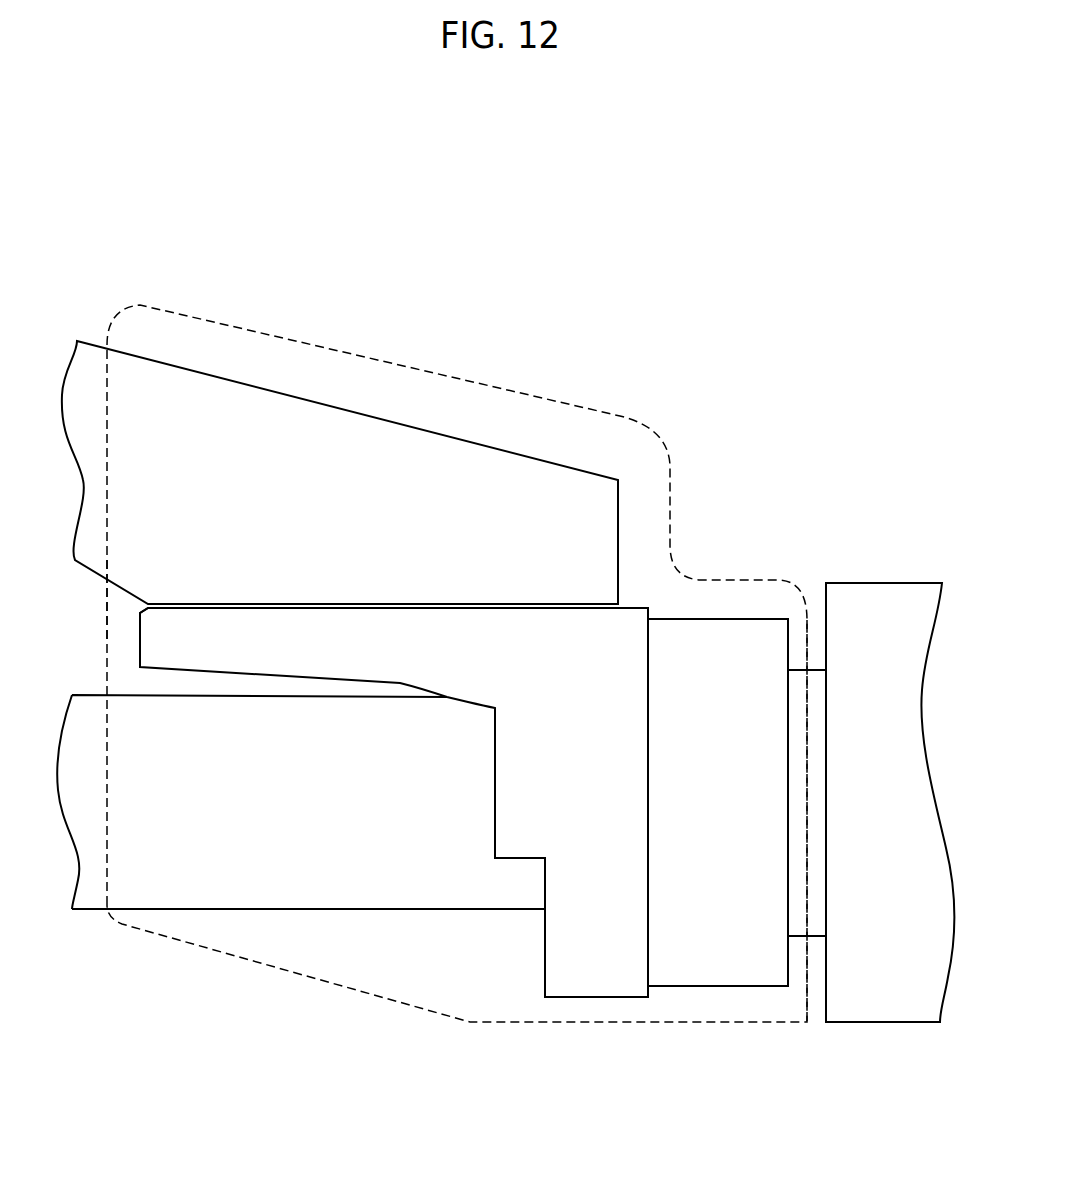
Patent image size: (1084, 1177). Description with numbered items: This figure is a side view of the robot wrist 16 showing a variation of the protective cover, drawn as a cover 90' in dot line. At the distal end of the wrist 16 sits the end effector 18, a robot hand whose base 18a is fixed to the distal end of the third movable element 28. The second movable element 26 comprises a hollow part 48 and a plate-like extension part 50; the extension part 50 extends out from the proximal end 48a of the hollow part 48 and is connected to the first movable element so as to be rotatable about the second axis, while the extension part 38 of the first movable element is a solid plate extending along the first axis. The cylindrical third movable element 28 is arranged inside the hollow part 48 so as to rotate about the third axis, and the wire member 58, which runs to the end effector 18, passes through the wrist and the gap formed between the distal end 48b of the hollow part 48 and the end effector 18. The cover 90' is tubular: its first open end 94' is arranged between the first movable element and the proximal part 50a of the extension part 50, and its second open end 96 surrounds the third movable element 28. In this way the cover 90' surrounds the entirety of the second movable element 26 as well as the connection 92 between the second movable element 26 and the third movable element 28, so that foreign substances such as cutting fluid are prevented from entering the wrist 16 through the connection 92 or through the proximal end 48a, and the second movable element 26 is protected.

The wrist 16 is at (330, 236).
The end effector 18 is at (927, 1024).
The base 18a is at (868, 975).
The second movable element 26 is at (732, 272).
The third movable element 28 is at (817, 711).
The extension part 38 is at (270, 389).
The hollow part 48 is at (708, 688).
The proximal end 48a is at (543, 963).
The distal end 48b is at (789, 700).
The extension part 50 is at (415, 643).
The proximal part 50a is at (140, 642).
The wire member 58 is at (170, 873).
The cover 90' is at (457, 628).
The connection 92 is at (796, 944).
The first open end 94' is at (72, 626).
The second open end 96 is at (810, 762).